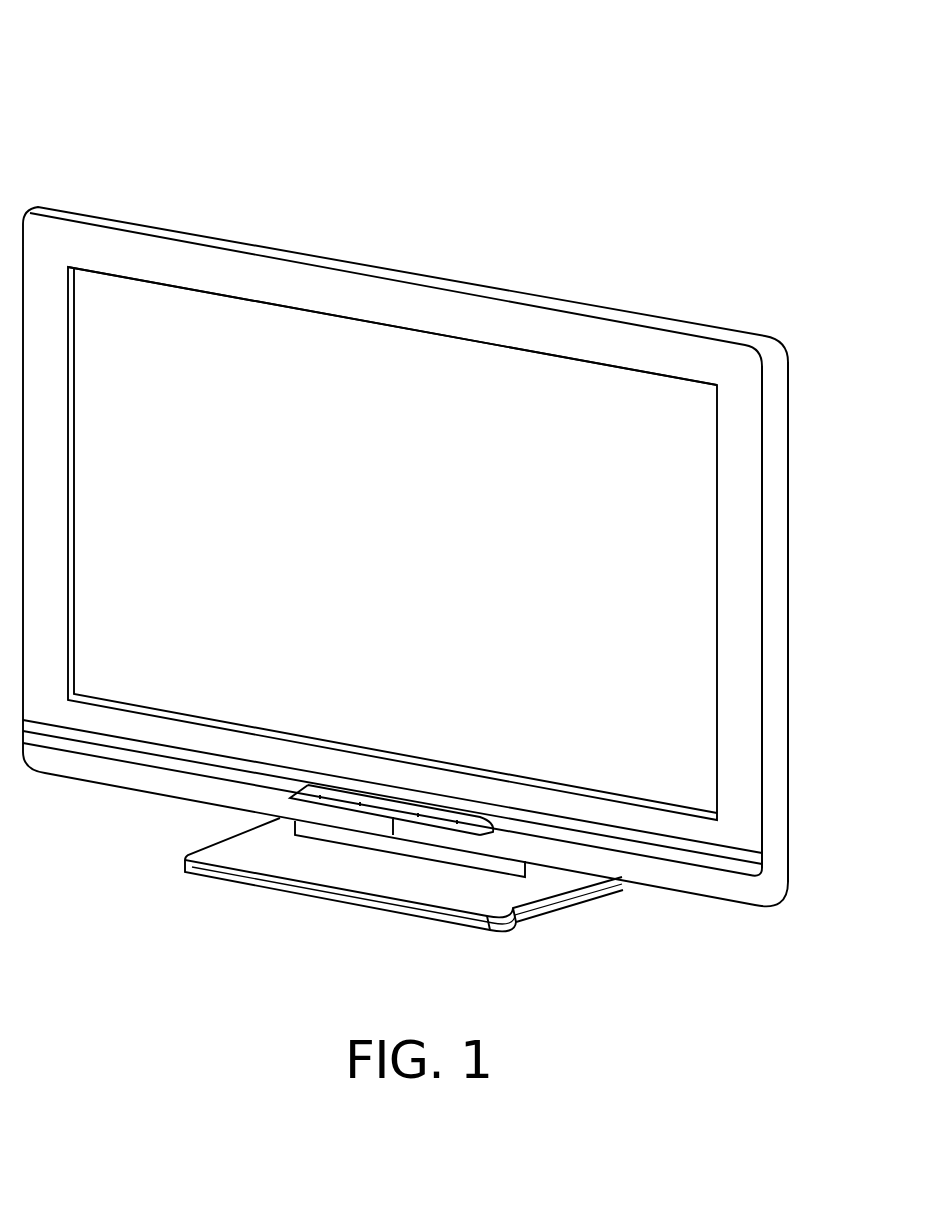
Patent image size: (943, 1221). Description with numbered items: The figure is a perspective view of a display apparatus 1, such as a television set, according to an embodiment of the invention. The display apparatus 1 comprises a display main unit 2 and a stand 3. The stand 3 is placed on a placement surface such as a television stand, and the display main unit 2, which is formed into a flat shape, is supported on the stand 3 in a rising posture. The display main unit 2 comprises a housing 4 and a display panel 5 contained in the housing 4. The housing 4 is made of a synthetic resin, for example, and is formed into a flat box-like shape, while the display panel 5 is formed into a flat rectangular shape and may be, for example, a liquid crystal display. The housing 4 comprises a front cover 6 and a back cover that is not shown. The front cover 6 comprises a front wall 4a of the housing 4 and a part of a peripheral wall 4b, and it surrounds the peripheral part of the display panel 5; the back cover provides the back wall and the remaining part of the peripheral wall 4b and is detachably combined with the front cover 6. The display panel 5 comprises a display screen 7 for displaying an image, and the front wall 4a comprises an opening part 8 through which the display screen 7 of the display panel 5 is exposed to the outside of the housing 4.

The display apparatus 1 is at (102, 105).
The display main unit 2 is at (594, 299).
The stand 3 is at (537, 922).
The housing 4 is at (356, 260).
The front wall 4a is at (750, 593).
The peripheral wall 4b is at (778, 717).
The display panel 5 is at (481, 365).
The front cover 6 is at (747, 454).
The display screen 7 is at (420, 547).
The opening part 8 is at (232, 298).